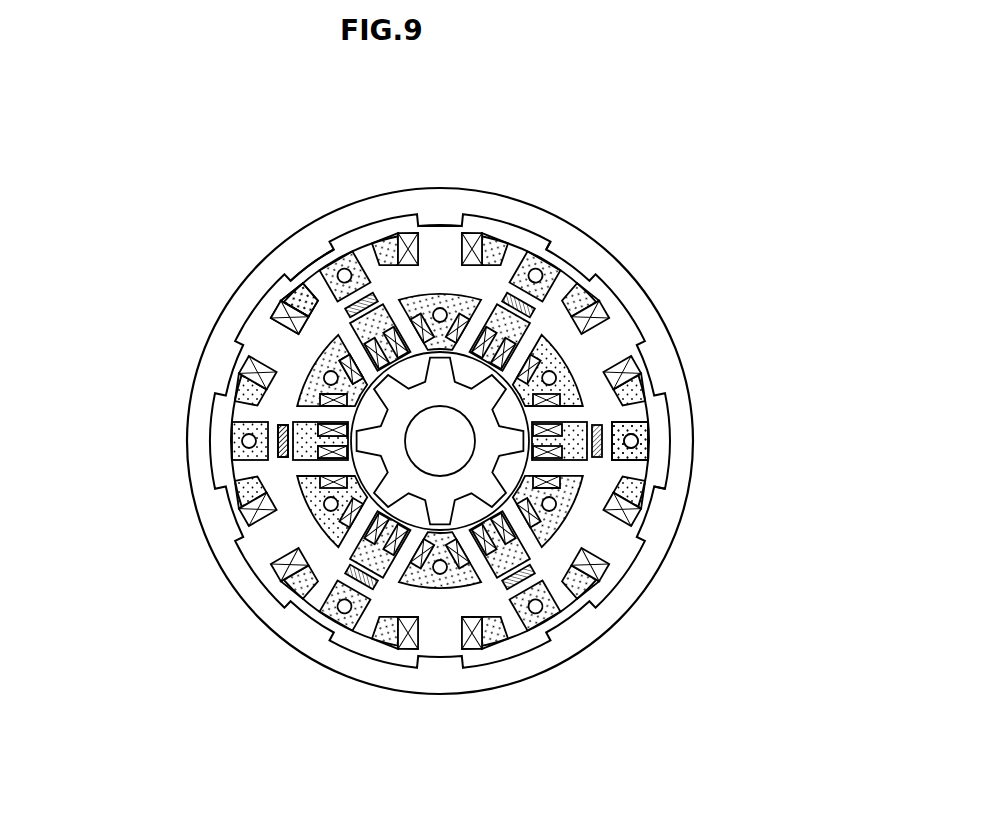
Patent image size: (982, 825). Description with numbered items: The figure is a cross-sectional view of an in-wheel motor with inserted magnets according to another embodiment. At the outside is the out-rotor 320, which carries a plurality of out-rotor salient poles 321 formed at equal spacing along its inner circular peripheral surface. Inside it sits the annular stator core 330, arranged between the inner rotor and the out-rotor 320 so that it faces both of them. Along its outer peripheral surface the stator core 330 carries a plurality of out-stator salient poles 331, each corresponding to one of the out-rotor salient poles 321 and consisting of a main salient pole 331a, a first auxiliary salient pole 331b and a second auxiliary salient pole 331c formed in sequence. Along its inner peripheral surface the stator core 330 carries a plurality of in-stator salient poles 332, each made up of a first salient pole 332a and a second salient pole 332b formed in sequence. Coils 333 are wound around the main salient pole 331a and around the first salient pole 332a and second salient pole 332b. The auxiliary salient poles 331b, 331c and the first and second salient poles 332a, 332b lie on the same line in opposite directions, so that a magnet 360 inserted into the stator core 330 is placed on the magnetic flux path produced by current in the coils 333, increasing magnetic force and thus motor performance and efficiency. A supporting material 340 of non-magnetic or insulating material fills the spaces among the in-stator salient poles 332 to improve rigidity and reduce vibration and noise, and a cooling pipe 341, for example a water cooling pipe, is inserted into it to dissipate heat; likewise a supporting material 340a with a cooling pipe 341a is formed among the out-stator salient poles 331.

The out-rotor 320 is at (585, 228).
The out-rotor salient pole 321 is at (547, 252).
The stator core 330 is at (596, 390).
The out-stator salient pole 331 is at (440, 370).
The main salient pole 331a is at (433, 235).
The first auxiliary salient pole 331b is at (362, 270).
The second auxiliary salient pole 331c is at (304, 214).
The in-stator salient pole 332 is at (339, 440).
The first salient pole 332a is at (283, 432).
The second salient pole 332b is at (312, 478).
The coil 333 is at (615, 545).
The supporting material 340 is at (417, 584).
The supporting material 340a is at (311, 334).
The cooling pipe 341 is at (440, 572).
The cooling pipe 341a is at (310, 312).
The magnet 360 is at (604, 441).